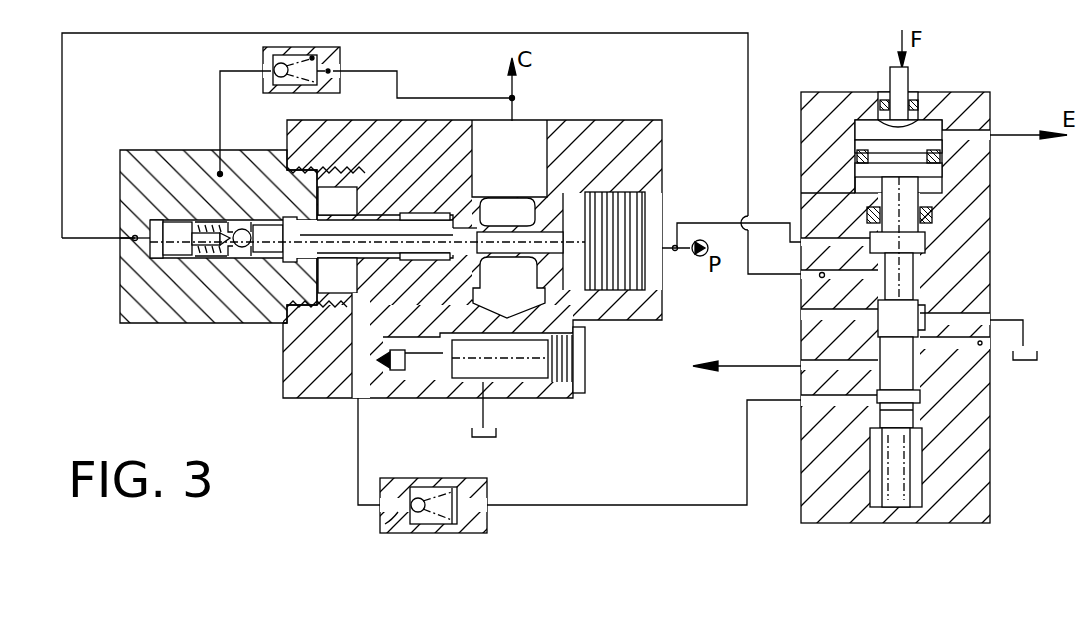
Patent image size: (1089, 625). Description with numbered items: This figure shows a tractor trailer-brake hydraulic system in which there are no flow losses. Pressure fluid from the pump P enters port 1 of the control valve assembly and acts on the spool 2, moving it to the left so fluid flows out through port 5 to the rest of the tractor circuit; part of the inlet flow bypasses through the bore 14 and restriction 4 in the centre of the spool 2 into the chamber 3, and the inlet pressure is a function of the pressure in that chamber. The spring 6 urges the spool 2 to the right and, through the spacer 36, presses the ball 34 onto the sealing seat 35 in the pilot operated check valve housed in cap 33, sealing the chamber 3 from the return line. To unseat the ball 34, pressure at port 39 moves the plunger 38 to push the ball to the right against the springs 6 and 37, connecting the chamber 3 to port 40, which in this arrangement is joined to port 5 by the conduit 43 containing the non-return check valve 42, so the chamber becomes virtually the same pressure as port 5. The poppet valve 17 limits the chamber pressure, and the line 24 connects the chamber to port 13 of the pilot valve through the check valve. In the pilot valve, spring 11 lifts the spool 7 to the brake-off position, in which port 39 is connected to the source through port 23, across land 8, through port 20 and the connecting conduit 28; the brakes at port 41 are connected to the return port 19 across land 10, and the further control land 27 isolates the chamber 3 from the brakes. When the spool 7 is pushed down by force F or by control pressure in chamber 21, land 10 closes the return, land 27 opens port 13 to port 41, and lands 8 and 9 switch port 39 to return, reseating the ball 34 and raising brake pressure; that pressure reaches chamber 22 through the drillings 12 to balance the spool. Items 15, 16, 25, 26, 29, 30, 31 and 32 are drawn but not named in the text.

The port 1 is at (615, 195).
The spool 2 is at (557, 232).
The chamber 3 is at (375, 238).
The restriction 4 is at (462, 232).
The port 5 is at (523, 135).
The spring 6 is at (338, 205).
The spool 7 is at (902, 203).
The land 8 is at (918, 242).
The land 9 is at (915, 290).
The land 10 is at (895, 318).
The spring 11 is at (917, 470).
The drillings 12 is at (907, 417).
The port 13 is at (847, 402).
The bore 14 is at (560, 235).
The tank port 15 is at (985, 315).
The outlet passage 16 is at (625, 316).
The poppet valve 17 is at (423, 372).
The port 19 is at (975, 350).
The port 20 is at (822, 282).
The chamber 21 is at (867, 137).
The chamber 22 is at (897, 493).
The port 23 is at (838, 237).
The line 24 is at (357, 442).
The actuating pin 25 is at (910, 82).
The seal 26 is at (945, 168).
The control land 27 is at (917, 383).
The connecting conduit 28 is at (656, 32).
The check valve housing 29 is at (475, 528).
The check valve ball 30 is at (417, 498).
The check valve spring 31 is at (437, 492).
The check valve seat 32 is at (380, 520).
The cap 33 is at (272, 312).
The ball 34 is at (243, 262).
The sealing seat 35 is at (242, 228).
The spacer 36 is at (283, 222).
The spring 37 is at (207, 263).
The plunger 38 is at (128, 248).
The port 39 is at (125, 252).
The port 40 is at (219, 172).
The port 41 is at (817, 363).
The non-return check valve 42 is at (336, 58).
The conduit 43 is at (218, 86).